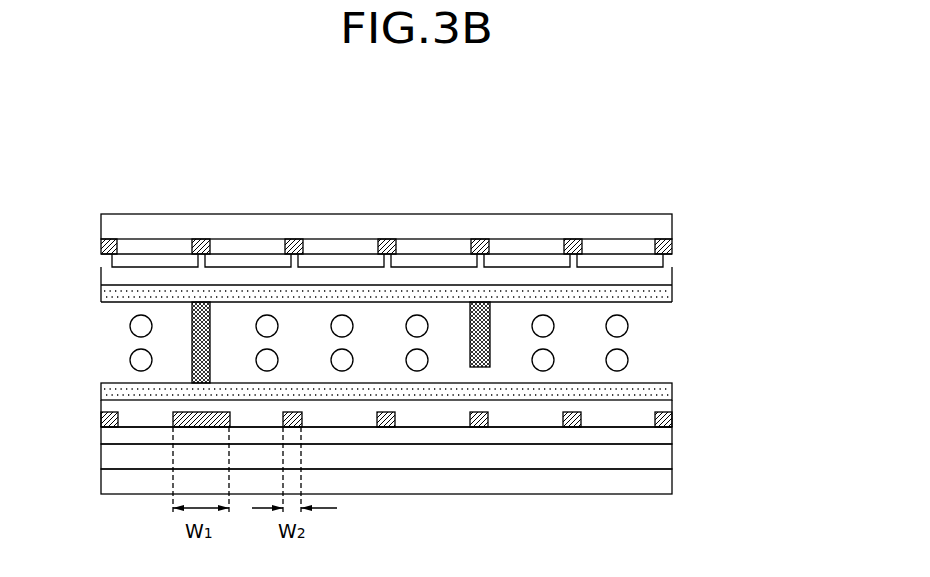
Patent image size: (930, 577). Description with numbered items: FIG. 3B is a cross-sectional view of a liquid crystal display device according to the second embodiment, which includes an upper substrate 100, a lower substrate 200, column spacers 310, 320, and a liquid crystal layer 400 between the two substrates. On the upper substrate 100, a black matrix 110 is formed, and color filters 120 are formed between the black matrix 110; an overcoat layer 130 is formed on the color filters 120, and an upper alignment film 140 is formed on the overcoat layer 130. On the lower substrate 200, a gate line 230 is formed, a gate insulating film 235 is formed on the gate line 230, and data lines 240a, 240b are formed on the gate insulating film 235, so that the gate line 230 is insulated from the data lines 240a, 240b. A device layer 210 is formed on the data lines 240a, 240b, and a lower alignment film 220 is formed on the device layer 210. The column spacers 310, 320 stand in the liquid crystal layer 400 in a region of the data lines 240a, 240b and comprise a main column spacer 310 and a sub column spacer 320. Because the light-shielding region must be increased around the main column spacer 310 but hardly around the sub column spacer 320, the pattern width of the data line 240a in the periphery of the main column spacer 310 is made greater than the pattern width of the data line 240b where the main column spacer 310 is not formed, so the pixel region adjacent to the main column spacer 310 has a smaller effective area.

The upper substrate 100 is at (672, 222).
The black matrix 110 is at (664, 250).
The color filters 120 is at (652, 262).
The overcoat layer 130 is at (672, 279).
The upper alignment film 140 is at (672, 297).
The main column spacer 310 is at (200, 302).
The sub column spacer 320 is at (480, 302).
The liquid crystal layer 400 is at (668, 345).
The lower alignment film 220 is at (672, 390).
The device layer 210 is at (666, 413).
The data line 240a is at (175, 428).
The data line 240b is at (387, 428).
The gate insulating film 235 is at (672, 436).
The gate line 230 is at (672, 458).
The lower substrate 200 is at (672, 484).